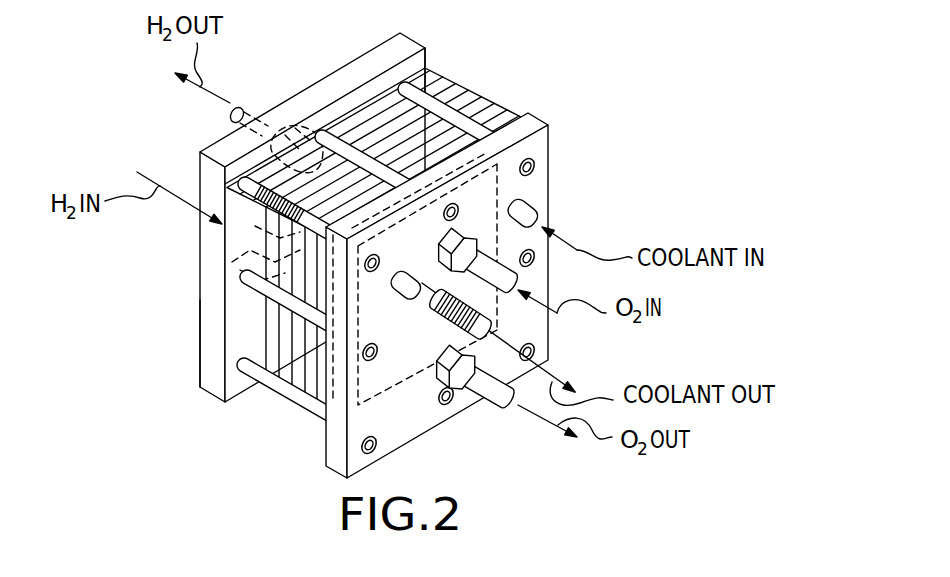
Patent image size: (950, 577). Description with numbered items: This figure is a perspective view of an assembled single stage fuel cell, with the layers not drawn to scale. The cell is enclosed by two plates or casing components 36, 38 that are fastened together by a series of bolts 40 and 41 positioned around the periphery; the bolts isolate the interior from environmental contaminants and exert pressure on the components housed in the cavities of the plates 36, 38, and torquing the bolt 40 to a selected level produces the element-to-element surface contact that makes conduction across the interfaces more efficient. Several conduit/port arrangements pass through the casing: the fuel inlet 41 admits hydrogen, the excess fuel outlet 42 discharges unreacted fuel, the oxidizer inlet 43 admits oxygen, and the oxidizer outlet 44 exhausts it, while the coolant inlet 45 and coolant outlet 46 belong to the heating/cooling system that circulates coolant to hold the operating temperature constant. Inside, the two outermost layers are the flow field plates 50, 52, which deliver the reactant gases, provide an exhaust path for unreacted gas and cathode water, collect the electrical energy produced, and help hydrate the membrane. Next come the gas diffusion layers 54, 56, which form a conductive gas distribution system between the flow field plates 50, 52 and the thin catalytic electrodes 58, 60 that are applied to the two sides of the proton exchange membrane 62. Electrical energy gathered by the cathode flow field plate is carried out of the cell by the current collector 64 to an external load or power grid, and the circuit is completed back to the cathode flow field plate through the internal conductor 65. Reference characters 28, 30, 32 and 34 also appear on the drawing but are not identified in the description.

The fuel cell stack assembly 28 is at (599, 181).
The fuel cell stack 30 is at (465, 152).
The end plates 32 is at (310, 454).
The rear end plate 34 is at (232, 200).
The plate or casing component 36 is at (422, 408).
The plate or casing component 38 is at (200, 356).
The bolt 40 is at (465, 160).
The fuel inlet port 41 is at (240, 252).
The excess fuel outlet port 42 is at (249, 111).
The oxidizer inlet port 43 is at (486, 258).
The oxidizer outlet port 44 is at (498, 396).
The coolant inlet 45 is at (535, 207).
The coolant outlet 46 is at (404, 292).
The flow field plate 50 is at (482, 166).
The flow field plate 52 is at (407, 174).
The gas diffusion layer 54 is at (468, 158).
The gas diffusion layer 56 is at (432, 142).
The catalytic electrode 58 is at (470, 133).
The catalytic electrode 60 is at (452, 136).
The PEM 62 is at (414, 157).
The current collector 64 is at (243, 176).
The internal conductor 65 is at (485, 323).